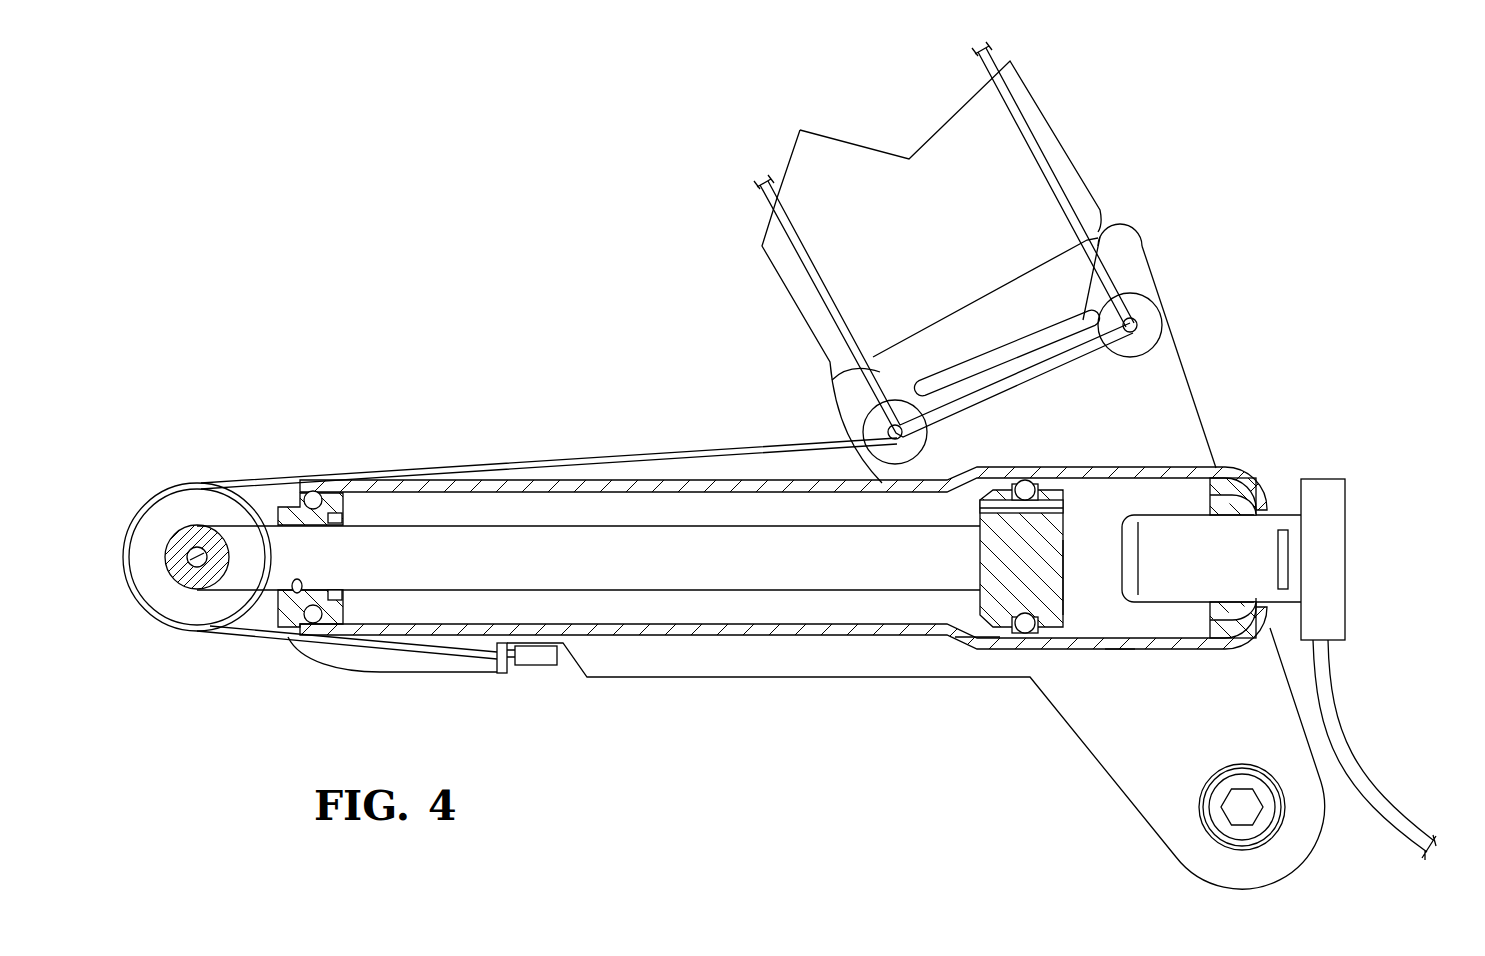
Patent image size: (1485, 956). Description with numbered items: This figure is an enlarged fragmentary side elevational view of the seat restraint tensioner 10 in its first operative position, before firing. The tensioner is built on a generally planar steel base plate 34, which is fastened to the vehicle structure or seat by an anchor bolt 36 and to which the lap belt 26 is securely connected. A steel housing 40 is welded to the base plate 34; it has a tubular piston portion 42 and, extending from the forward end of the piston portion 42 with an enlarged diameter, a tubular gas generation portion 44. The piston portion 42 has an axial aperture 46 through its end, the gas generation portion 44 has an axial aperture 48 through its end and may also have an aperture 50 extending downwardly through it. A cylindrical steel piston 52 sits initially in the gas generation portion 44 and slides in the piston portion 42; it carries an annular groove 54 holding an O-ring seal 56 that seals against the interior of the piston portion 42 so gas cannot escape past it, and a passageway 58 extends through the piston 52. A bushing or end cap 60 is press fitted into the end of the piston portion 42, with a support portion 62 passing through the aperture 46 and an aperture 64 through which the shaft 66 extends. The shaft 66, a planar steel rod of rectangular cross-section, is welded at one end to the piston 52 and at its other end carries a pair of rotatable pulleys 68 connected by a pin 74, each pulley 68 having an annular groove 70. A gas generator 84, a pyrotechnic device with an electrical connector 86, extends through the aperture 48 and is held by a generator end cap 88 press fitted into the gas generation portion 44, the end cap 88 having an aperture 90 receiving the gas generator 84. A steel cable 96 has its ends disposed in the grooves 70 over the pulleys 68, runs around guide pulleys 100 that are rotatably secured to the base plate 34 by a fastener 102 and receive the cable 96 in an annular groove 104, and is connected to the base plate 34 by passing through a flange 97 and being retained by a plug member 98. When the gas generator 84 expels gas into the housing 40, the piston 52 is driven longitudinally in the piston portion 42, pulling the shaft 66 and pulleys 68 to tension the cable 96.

The seat restraint tensioner 10 is at (603, 276).
The lap belt 26 is at (805, 160).
The base plate 34 is at (1182, 399).
The anchor bolt 36 is at (1230, 815).
The housing 40 is at (782, 671).
The piston portion 42 is at (720, 631).
The gas generation portion 44 is at (970, 640).
The aperture 46 is at (322, 494).
The aperture 48 is at (1262, 508).
The aperture 50 is at (1120, 648).
The piston 52 is at (985, 600).
The annular groove 54 is at (1028, 486).
The seal 56 is at (1026, 632).
The passageway 58 is at (1052, 617).
The end cap 60 is at (322, 615).
The support portion 62 is at (295, 510).
The aperture 64 is at (300, 607).
The shaft 66 is at (440, 545).
The pulleys 68 is at (180, 505).
The annular groove 70 is at (232, 622).
The pin 74 is at (192, 560).
The gas generator 84 is at (1259, 518).
The electrical connector 86 is at (1331, 565).
The end cap 88 is at (1246, 627).
The aperture 90 is at (1270, 594).
The cable 96 is at (992, 65).
The flange 97 is at (505, 669).
The plug member 98 is at (538, 661).
The guide pulleys 100 is at (1140, 292).
The fastener 102 is at (1137, 328).
The annular groove 104 is at (1152, 317).